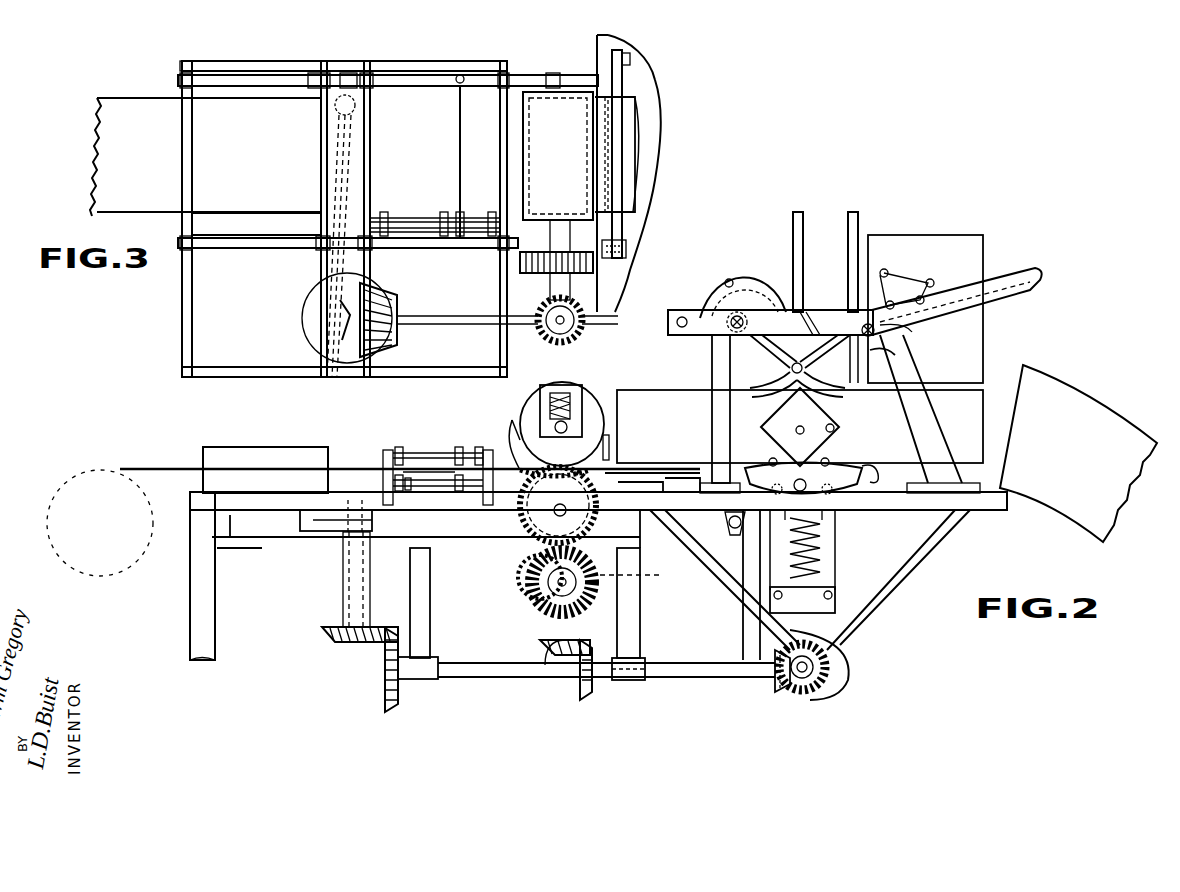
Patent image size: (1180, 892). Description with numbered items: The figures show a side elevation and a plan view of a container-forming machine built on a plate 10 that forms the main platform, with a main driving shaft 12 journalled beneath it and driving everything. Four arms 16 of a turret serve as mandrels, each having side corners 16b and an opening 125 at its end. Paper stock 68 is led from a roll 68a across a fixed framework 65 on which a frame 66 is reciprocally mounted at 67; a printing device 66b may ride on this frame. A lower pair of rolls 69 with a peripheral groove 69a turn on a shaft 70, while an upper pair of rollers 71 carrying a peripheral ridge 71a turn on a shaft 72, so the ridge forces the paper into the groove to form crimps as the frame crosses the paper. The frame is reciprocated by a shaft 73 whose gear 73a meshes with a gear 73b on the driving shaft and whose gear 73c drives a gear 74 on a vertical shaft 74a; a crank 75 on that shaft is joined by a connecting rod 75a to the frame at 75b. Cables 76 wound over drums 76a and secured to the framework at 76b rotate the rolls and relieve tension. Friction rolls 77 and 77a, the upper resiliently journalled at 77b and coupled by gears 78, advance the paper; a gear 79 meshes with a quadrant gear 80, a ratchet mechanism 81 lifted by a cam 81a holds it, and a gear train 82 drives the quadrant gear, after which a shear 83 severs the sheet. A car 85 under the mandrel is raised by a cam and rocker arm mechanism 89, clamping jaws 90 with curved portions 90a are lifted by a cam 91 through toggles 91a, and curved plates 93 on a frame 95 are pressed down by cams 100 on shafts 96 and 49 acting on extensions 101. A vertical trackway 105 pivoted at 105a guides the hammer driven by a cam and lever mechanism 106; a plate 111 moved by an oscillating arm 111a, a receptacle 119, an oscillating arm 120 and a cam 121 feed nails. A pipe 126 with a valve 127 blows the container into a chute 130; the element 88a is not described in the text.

In FIG. 3, the plate 10 is at (617, 285).
In FIG. 2, the main driving shaft 12 is at (830, 668).
In FIG. 2, the arm 16 is at (925, 335).
In FIG. 2, the side corner 16b is at (835, 430).
In FIG. 2, the shaft 49 is at (895, 352).
In FIG. 3, the framework 65 is at (437, 242).
In FIG. 3, the frame 66 is at (430, 368).
In FIG. 2, the frame 66 is at (345, 492).
In FIG. 3, the printing device 66b is at (258, 220).
In FIG. 2, the printing device 66b is at (245, 450).
In FIG. 3, the mounting 67 is at (372, 82).
In FIG. 3, the paper stock 68 is at (205, 157).
In FIG. 2, the paper stock 68 is at (410, 454).
In FIG. 2, the roll 68a is at (95, 476).
In FIG. 2, the rolls 69 is at (409, 492).
In FIG. 2, the peripheral groove 69a is at (399, 492).
In FIG. 2, the shaft 70 is at (430, 490).
In FIG. 3, the rollers 71 is at (385, 216).
In FIG. 2, the rollers 71 is at (400, 448).
In FIG. 2, the peripheral ridge 71a is at (480, 446).
In FIG. 3, the shaft 72 is at (415, 222).
In FIG. 2, the shaft 72 is at (422, 452).
In FIG. 3, the shaft 73 is at (440, 322).
In FIG. 2, the shaft 73 is at (476, 675).
In FIG. 2, the gear 73a is at (640, 660).
In FIG. 2, the gear 73b is at (795, 692).
In FIG. 3, the gear 73c is at (398, 300).
In FIG. 2, the gear 73c is at (398, 696).
In FIG. 2, the gear 74 is at (335, 645).
In FIG. 2, the vertical shaft 74a is at (345, 596).
In FIG. 3, the crank 75 is at (333, 365).
In FIG. 2, the crank 75 is at (345, 550).
In FIG. 3, the connecting rod 75a is at (315, 333).
In FIG. 2, the connecting rod 75a is at (365, 545).
In FIG. 3, the connection 75b is at (360, 110).
In FIG. 3, the cables 76 is at (462, 150).
In FIG. 3, the drums 76a is at (462, 210).
In FIG. 2, the drums 76a is at (460, 492).
In FIG. 3, the cable securing point 76b is at (468, 76).
In FIG. 3, the friction roll 77 is at (556, 260).
In FIG. 2, the friction roll 77 is at (524, 522).
In FIG. 3, the friction roll 77a is at (579, 156).
In FIG. 2, the friction roll 77a is at (595, 395).
In FIG. 2, the resilient journal 77b is at (540, 390).
In FIG. 2, the gears 78 is at (528, 437).
In FIG. 2, the gear 79 is at (535, 555).
In FIG. 2, the quadrant gear 80 is at (535, 580).
In FIG. 2, the ratchet mechanism 81 is at (672, 535).
In FIG. 2, the cam 81a is at (640, 585).
In FIG. 2, the gear train 82 is at (545, 643).
In FIG. 3, the shear 83 is at (622, 82).
In FIG. 2, the shear 83 is at (610, 448).
In FIG. 2, the car 85 is at (838, 462).
In FIG. 2, the pin 88a is at (875, 468).
In FIG. 2, the cam and rocker arm mechanism 89 is at (750, 580).
In FIG. 2, the clamping jaws 90 is at (840, 520).
In FIG. 2, the curved portion 90a is at (880, 515).
In FIG. 2, the cam 91 is at (848, 642).
In FIG. 2, the lifting toggles 91a is at (830, 560).
In FIG. 2, the curved plates 93 is at (755, 396).
In FIG. 2, the frame 95 is at (712, 350).
In FIG. 2, the shaft 96 is at (735, 312).
In FIG. 2, the cams 100 is at (745, 315).
In FIG. 2, the extensions 101 is at (728, 365).
In FIG. 2, the vertical trackway 105 is at (800, 210).
In FIG. 2, the pivot 105a is at (805, 305).
In FIG. 2, the cam and lever mechanism 106 is at (722, 278).
In FIG. 2, the plate 111 is at (886, 270).
In FIG. 2, the oscillating arm 111a is at (935, 280).
In FIG. 2, the receptacle 119 is at (1010, 268).
In FIG. 2, the oscillating arm 120 is at (915, 325).
In FIG. 2, the cam 121 is at (880, 332).
In FIG. 2, the opening 125 is at (800, 427).
In FIG. 2, the pipe 126 is at (858, 222).
In FIG. 2, the valve 127 is at (945, 385).
In FIG. 2, the chute 130 is at (1068, 385).